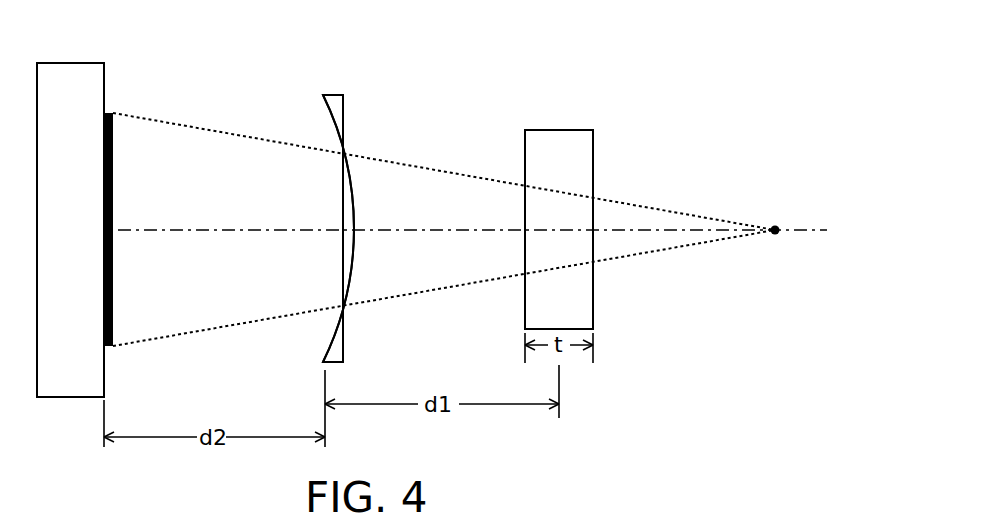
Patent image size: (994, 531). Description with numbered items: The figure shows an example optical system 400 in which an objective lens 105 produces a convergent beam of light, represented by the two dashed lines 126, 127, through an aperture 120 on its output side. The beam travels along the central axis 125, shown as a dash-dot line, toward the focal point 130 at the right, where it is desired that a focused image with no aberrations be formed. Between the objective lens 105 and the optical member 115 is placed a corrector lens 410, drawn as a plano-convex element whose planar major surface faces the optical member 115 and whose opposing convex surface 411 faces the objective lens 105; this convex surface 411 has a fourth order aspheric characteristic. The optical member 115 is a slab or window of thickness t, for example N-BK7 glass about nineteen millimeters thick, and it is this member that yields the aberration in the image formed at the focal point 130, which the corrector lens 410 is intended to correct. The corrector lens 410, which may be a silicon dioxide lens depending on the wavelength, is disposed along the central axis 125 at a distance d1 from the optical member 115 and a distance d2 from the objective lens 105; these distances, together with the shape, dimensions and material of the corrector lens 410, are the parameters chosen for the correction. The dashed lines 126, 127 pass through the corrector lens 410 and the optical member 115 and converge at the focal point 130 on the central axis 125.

The objective lens 105 is at (105, 93).
The aperture 120 is at (113, 193).
The central axis 125 is at (155, 232).
The dashed line 126 is at (167, 122).
The dashed line 127 is at (192, 333).
The corrector lens 410 is at (308, 130).
The convex surface 411 is at (287, 183).
The optical member 115 is at (593, 158).
The focal point 130 is at (775, 228).
The optical system 400 is at (659, 52).